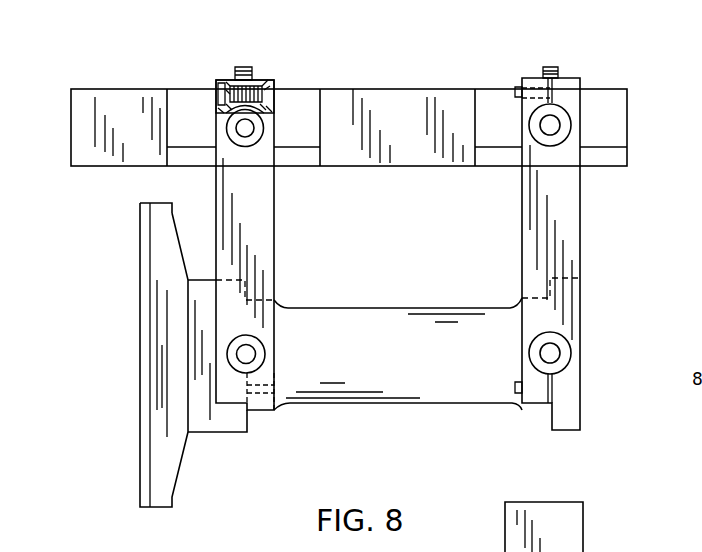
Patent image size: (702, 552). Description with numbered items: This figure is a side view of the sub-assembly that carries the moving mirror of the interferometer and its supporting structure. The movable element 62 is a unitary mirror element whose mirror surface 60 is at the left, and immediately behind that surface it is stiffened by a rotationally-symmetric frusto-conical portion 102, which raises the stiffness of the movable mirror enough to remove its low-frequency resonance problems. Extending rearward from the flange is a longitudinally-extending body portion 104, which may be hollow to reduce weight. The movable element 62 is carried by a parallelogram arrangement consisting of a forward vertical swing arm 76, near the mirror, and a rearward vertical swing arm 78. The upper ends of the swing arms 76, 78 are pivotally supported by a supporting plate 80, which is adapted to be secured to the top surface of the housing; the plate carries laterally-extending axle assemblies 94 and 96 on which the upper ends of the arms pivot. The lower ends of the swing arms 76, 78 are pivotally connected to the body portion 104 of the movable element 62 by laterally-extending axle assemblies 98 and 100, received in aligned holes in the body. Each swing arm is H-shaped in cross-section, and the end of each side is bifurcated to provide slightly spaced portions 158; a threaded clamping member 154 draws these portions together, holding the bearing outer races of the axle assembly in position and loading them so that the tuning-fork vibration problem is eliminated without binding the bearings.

The mirror surface 60 is at (136, 357).
The movable element 62 is at (407, 404).
The forward vertical swing arm 76 is at (262, 236).
The rearward vertical swing arm 78 is at (542, 248).
The supporting plate 80 is at (404, 90).
The axle assembly 94 is at (257, 149).
The axle assembly 96 is at (565, 135).
The axle assembly 98 is at (276, 362).
The axle assembly 100 is at (575, 364).
The frusto-conical portion 102 is at (182, 470).
The body portion 104 is at (462, 383).
The threaded clamping member 154 is at (274, 92).
The spaced portions 158 is at (270, 80).